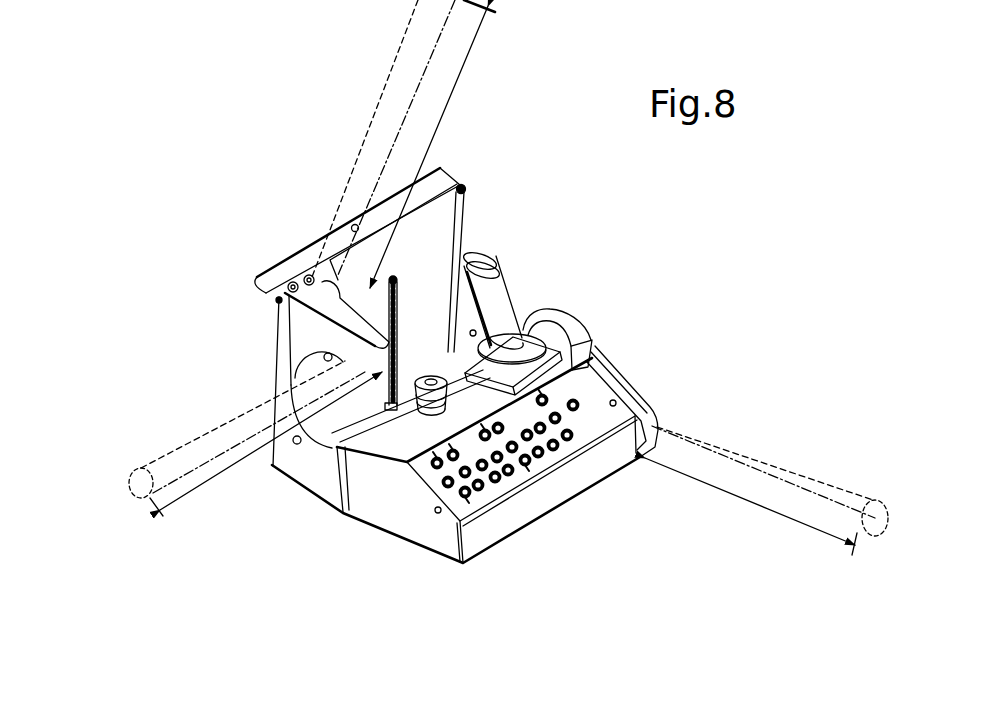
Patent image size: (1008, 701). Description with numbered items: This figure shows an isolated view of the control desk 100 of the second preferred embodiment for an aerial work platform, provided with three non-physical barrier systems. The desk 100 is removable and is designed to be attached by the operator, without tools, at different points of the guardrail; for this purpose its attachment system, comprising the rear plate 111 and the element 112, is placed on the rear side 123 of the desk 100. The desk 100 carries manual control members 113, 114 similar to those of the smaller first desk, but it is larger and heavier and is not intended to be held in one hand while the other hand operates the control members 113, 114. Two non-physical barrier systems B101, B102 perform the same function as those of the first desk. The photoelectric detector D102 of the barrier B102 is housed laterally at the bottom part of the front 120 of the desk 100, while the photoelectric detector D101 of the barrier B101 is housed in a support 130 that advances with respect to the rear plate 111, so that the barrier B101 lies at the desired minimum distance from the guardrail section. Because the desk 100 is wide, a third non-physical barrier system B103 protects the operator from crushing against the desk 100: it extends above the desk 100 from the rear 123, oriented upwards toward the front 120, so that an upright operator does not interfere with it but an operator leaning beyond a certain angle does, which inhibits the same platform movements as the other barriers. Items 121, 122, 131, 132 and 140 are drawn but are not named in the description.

The control desk 100 is at (614, 320).
The rear plate 111 is at (420, 250).
The attachment system element 112 is at (249, 299).
The manual control member 113 is at (496, 285).
The manual control member 114 is at (505, 497).
The front 120 is at (603, 516).
The right clamp bracket 121 is at (653, 352).
The left side plate 122 is at (341, 541).
The rear side 123 is at (293, 154).
The support 130 is at (365, 345).
The fastener 131 is at (292, 281).
The fastener 132 is at (312, 275).
The fastening hole 140 is at (297, 446).
The non-physical barrier system B101 is at (184, 455).
The non-physical barrier system B102 is at (800, 477).
The third non-physical barrier system B103 is at (415, 35).
The photoelectric detector D101 is at (338, 343).
The photoelectric detector D102 is at (662, 413).